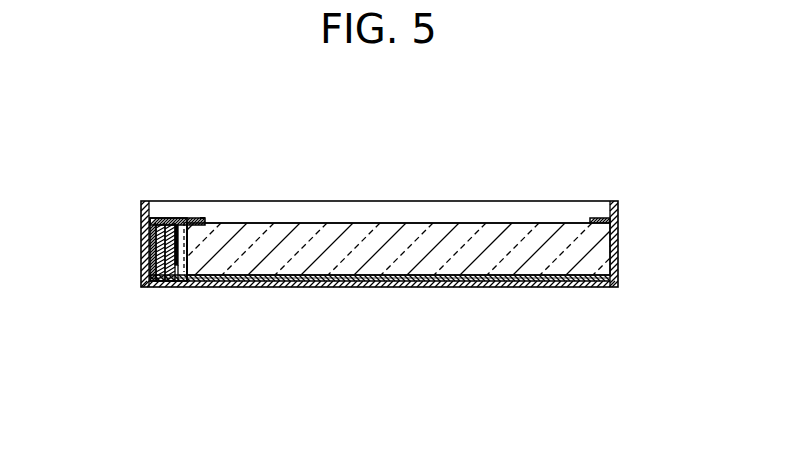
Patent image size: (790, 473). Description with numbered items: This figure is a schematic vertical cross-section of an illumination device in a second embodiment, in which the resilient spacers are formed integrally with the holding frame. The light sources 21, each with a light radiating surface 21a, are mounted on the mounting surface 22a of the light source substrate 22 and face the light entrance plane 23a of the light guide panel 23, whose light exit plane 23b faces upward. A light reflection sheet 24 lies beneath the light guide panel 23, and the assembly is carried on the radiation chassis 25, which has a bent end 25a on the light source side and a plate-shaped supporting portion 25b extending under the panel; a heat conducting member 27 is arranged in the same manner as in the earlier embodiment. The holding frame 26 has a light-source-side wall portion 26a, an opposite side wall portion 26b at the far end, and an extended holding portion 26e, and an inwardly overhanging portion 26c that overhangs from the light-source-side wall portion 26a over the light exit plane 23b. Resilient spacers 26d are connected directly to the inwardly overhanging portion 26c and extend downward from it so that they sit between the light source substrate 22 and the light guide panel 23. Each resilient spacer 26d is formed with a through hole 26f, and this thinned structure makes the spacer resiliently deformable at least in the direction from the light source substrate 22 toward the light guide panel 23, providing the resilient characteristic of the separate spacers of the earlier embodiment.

The light source 21 is at (179, 218).
The light radiating surface 21a is at (180, 248).
The light source substrate 22 is at (165, 218).
The mounting surface 22a is at (170, 268).
The light guide panel 23 is at (440, 233).
The light entrance plane 23a is at (180, 270).
The light exit plane 23b is at (363, 223).
The light reflection sheet 24 is at (393, 287).
The radiation chassis 25 is at (302, 287).
The bent end 25a is at (149, 245).
The plate-shaped supporting portion 25b is at (477, 287).
The holding frame 26 is at (620, 250).
The light-source-side wall portion 26a is at (141, 262).
The opposite side wall portion 26b is at (620, 277).
The inwardly overhanging portion 26c is at (207, 218).
The resilient spacer 26d is at (190, 247).
The extended holding portion 26e is at (620, 208).
The through hole 26f is at (184, 222).
The heat conducting member 27 is at (160, 218).